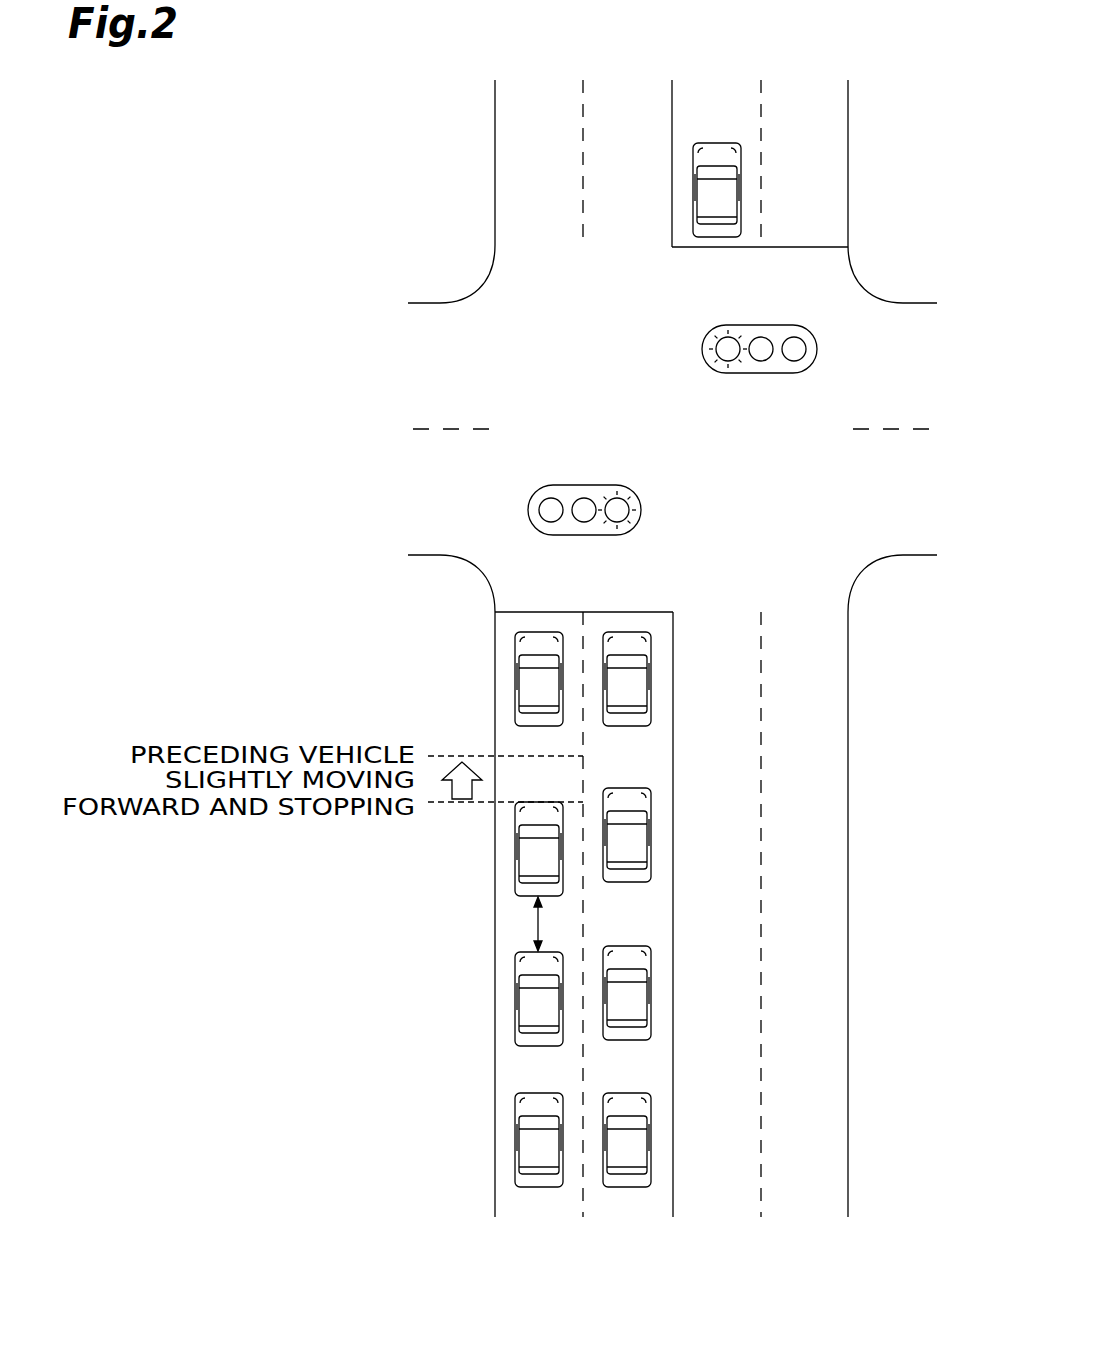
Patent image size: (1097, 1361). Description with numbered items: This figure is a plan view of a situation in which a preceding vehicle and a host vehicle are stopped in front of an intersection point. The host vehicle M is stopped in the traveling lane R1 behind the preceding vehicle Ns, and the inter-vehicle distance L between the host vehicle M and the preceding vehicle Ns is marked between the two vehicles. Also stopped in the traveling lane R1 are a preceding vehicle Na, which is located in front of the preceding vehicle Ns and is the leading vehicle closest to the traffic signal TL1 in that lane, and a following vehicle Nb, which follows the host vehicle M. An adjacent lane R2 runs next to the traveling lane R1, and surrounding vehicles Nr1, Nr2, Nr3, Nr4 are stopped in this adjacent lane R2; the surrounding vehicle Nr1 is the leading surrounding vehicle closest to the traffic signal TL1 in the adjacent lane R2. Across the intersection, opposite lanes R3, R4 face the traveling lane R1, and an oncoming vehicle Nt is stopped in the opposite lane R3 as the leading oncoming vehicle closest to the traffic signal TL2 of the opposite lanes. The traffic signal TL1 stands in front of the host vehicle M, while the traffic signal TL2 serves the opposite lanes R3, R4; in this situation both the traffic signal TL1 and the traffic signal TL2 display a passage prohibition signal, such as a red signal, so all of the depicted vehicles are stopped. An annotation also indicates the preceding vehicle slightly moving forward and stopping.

The traveling lane R1 is at (495, 1228).
The adjacent lane R2 is at (672, 1228).
The opposite lane R3 is at (672, 66).
The opposite lane R4 is at (762, 66).
The oncoming vehicle Nt is at (703, 190).
The traffic signal TL1 is at (528, 493).
The traffic signal TL2 is at (820, 349).
The preceding vehicle Na is at (527, 678).
The preceding vehicle Ns is at (527, 855).
The host vehicle M is at (527, 996).
The following vehicle Nb is at (527, 1145).
The surrounding vehicle Nr1 is at (640, 677).
The surrounding vehicle Nr2 is at (640, 834).
The surrounding vehicle Nr3 is at (640, 993).
The surrounding vehicle Nr4 is at (640, 1148).
The inter-vehicle distance L is at (538, 925).